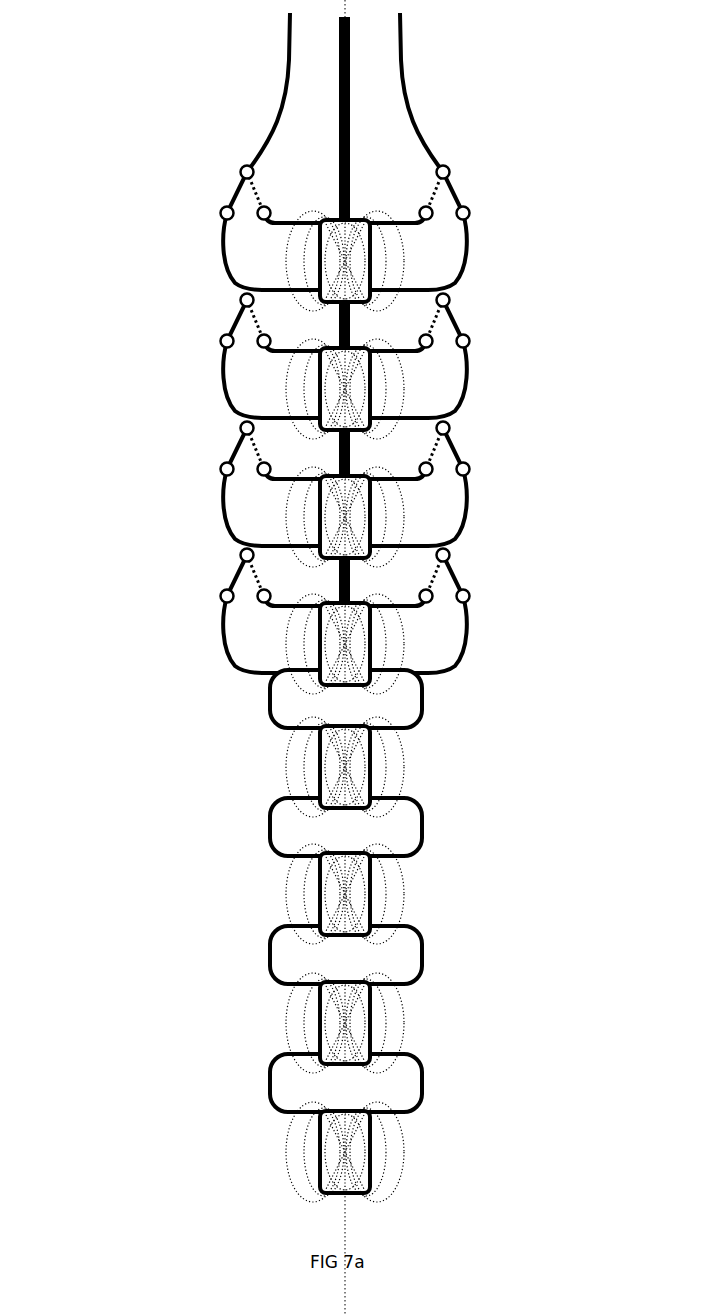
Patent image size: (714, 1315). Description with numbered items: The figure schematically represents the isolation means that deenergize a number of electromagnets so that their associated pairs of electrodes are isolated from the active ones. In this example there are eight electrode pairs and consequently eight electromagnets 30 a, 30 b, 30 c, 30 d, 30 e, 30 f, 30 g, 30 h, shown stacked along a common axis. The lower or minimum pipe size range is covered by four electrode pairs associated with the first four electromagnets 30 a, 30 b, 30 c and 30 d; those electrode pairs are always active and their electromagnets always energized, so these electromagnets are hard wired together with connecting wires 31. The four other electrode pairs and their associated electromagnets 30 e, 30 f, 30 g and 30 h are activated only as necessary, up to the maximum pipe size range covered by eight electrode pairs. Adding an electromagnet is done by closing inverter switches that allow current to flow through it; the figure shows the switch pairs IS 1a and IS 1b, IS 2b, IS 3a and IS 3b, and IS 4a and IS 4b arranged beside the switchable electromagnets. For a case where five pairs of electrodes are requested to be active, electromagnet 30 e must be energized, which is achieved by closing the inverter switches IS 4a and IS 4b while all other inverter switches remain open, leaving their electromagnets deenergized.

The electromagnet 30 a is at (372, 1148).
The electromagnet 30 b is at (372, 1020).
The electromagnet 30 c is at (372, 890).
The electromagnet 30 d is at (372, 762).
The electromagnet 30 e is at (372, 633).
The electromagnet 30 f is at (372, 503).
The electromagnet 30 g is at (372, 380).
The electromagnet 30 h is at (372, 257).
The connecting wires 31 is at (420, 703).
The inverter switch IS 1a is at (237, 200).
The inverter switch IS 1b is at (453, 200).
The inverter switch IS 2b is at (237, 328).
The inverter switch IS 3a is at (237, 455).
The inverter switch IS 3b is at (453, 456).
The inverter switch IS 4a is at (237, 583).
The inverter switch IS 4b is at (453, 583).